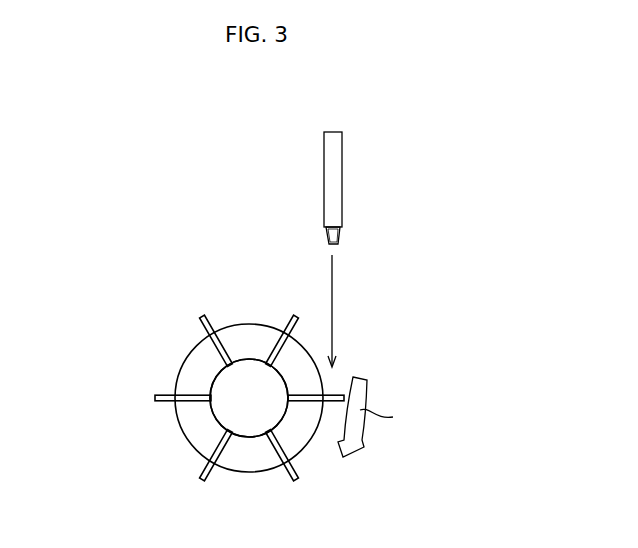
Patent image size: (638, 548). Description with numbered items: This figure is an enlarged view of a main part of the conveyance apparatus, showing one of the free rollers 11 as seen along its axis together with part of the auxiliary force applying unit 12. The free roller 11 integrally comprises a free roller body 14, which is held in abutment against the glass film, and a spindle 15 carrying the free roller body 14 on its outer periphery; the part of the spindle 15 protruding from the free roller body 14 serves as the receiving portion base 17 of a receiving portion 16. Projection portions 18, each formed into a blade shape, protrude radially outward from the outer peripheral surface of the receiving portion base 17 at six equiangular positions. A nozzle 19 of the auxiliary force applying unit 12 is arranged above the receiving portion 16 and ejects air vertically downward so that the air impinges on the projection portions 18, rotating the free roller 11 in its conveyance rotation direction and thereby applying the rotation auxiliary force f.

The free roller 11 is at (243, 312).
The auxiliary force applying unit 12 is at (392, 271).
The free roller body 14 is at (182, 365).
The spindle 15 is at (250, 420).
The receiving portion 16 is at (185, 340).
The receiving portion base 17 is at (249, 398).
The projection portion 18 is at (334, 394).
The nozzle 19 is at (335, 180).